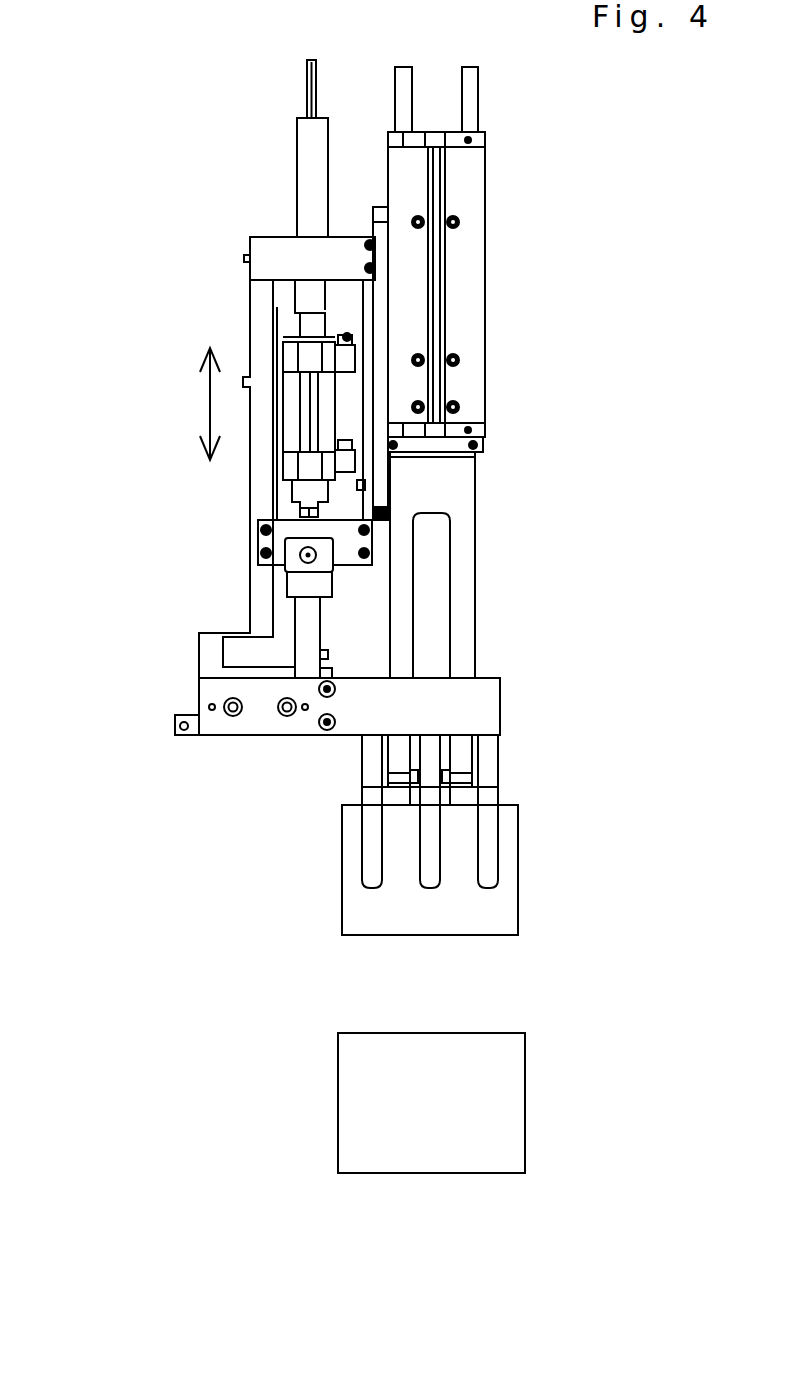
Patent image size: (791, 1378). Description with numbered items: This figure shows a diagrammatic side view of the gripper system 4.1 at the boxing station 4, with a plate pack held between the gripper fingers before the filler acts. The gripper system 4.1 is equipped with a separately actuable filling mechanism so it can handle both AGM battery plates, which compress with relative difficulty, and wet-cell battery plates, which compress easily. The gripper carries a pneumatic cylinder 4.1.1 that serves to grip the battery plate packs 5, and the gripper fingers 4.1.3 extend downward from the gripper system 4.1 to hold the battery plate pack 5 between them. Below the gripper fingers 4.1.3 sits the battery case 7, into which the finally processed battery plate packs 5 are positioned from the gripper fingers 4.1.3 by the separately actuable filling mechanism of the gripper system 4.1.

The boxing station 4 is at (380, 474).
The gripper system 4.1 is at (500, 707).
The pneumatic cylinder 4.1.1 is at (293, 360).
The gripper fingers 4.1.3 is at (488, 827).
The battery plate pack 5 is at (383, 905).
The battery case 7 is at (460, 1132).